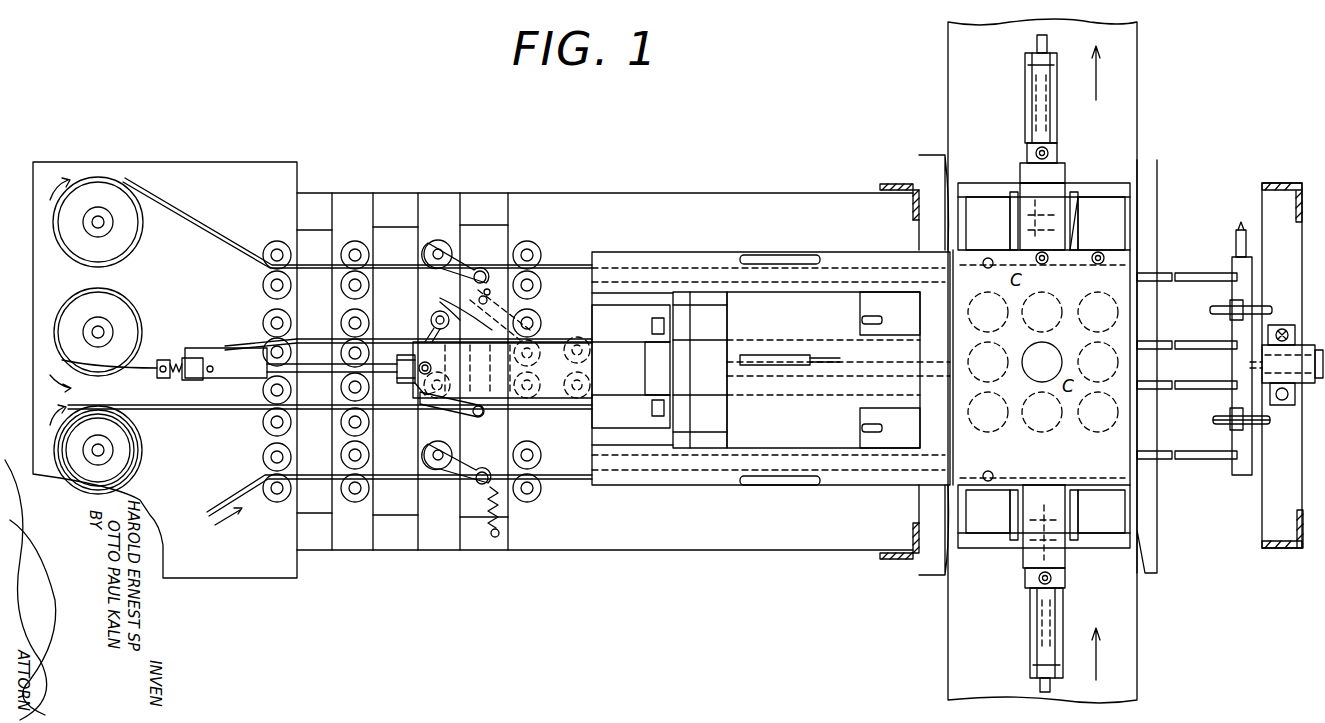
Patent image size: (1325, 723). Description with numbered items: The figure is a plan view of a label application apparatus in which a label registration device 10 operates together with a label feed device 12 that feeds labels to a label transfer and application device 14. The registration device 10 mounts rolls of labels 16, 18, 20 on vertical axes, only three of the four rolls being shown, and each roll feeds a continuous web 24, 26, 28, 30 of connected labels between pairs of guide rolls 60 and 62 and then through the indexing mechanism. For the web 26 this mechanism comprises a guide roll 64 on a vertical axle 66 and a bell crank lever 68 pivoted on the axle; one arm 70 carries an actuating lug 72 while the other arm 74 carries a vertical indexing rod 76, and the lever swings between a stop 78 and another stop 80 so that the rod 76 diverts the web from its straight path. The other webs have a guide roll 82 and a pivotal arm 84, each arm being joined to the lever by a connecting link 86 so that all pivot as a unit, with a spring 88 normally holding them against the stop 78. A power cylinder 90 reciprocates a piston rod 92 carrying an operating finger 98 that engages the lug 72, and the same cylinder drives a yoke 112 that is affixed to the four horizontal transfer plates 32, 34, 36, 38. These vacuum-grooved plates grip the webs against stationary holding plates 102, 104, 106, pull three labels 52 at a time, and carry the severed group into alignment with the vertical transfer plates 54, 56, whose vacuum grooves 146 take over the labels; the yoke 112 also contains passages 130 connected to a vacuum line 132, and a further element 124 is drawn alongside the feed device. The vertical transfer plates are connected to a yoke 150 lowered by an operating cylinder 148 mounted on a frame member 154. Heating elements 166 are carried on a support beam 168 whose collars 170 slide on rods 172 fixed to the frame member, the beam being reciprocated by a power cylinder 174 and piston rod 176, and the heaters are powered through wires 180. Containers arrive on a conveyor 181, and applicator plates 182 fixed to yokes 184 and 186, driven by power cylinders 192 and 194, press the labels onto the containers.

The label registration device 10 is at (458, 177).
The label feed device 12 is at (838, 180).
The label transfer and application device 14 is at (1167, 148).
The roll of labels 16 is at (128, 243).
The roll of labels 18 is at (125, 325).
The roll of labels 20 is at (138, 450).
The web 24 is at (222, 248).
The web 26 is at (125, 372).
The web 28 is at (190, 412).
The web 30 is at (217, 508).
The horizontal transfer plate 32 is at (592, 262).
The horizontal transfer plate 34 is at (631, 350).
The horizontal transfer plate 36 is at (631, 411).
The horizontal transfer plate 38 is at (592, 458).
The labels 52 is at (953, 272).
The end vertical transfer plate 54 is at (1098, 304).
The end vertical transfer plate 56 is at (1099, 396).
The guide roll 60 is at (282, 234).
The guide roll 62 is at (362, 236).
The guide roll 64 is at (430, 314).
The vertical axle 66 is at (426, 330).
The bell crank lever 68 is at (438, 300).
The arm 70 is at (408, 348).
The actuating lug 72 is at (410, 387).
The arm 74 is at (533, 292).
The indexing rod 76 is at (507, 402).
The stop 78 is at (502, 370).
The stop 80 is at (470, 300).
The guide roll 82 is at (436, 241).
The arm 84 is at (478, 270).
The connecting link 86 is at (507, 440).
The spring 88 is at (500, 514).
The power cylinder 90 is at (549, 320).
The piston rod 92 is at (247, 374).
The operating finger 98 is at (194, 348).
The stationary holding plate 102 is at (602, 490).
The stationary holding plate 104 is at (846, 355).
The stationary holding plate 106 is at (627, 258).
The yoke 112 is at (727, 316).
The guide rod 124 is at (806, 255).
The passages 130 is at (860, 416).
The vacuum line 132 is at (890, 313).
The vacuum grooves 146 is at (1028, 246).
The operating cylinder 148 is at (1056, 362).
The yoke 150 is at (1070, 262).
The frame member 154 is at (1290, 548).
The heating elements 166 is at (1212, 278).
The support beam 168 is at (1241, 486).
The collars 170 is at (1230, 316).
The rods 172 is at (1212, 426).
The power cylinder 174 is at (1298, 340).
The piston rod 176 is at (1300, 405).
The wires 180 is at (1238, 228).
The conveyor 181 is at (1137, 670).
The applicator plates 182 is at (962, 236).
The yoke 184 is at (984, 192).
The yoke 186 is at (1104, 548).
The power cylinder 192 is at (1057, 128).
The power cylinder 194 is at (1030, 630).